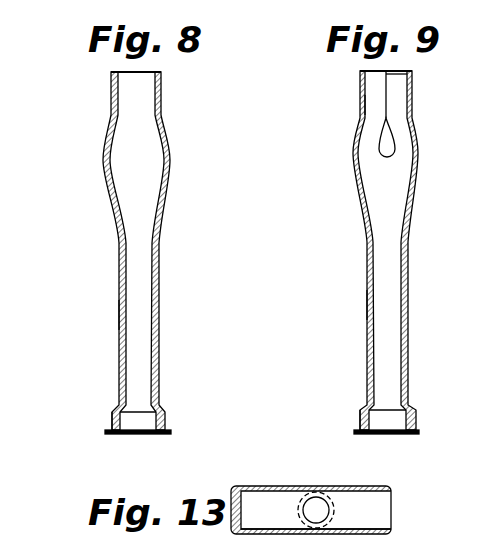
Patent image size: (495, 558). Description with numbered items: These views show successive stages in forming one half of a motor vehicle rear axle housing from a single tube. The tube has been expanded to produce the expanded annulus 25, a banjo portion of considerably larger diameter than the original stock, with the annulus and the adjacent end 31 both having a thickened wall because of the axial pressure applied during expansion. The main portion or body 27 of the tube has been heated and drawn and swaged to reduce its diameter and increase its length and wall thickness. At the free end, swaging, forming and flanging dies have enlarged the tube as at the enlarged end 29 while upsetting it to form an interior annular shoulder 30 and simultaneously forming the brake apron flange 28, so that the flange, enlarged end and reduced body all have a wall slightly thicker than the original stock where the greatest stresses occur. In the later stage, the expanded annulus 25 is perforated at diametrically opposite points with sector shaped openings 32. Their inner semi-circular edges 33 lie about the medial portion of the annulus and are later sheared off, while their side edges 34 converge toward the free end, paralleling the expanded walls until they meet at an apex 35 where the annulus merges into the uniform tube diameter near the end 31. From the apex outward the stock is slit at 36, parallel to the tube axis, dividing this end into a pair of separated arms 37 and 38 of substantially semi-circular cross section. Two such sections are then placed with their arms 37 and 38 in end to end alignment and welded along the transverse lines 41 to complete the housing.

In FIG. 8, the expanded annulus 25 is at (103, 161).
In FIG. 9, the expanded annulus 25 is at (385, 250).
In FIG. 8, the main portion or body 27 is at (119, 314).
In FIG. 9, the main portion or body 27 is at (367, 304).
In FIG. 8, the brake apron flange 28 is at (105, 432).
In FIG. 9, the brake apron flange 28 is at (354, 431).
In FIG. 8, the enlarged end 29 is at (112, 420).
In FIG. 9, the enlarged end 29 is at (361, 415).
In FIG. 8, the interior annular shoulder 30 is at (156, 414).
In FIG. 9, the interior annular shoulder 30 is at (410, 412).
In FIG. 8, the adjacent end 31 is at (162, 100).
In FIG. 9, the adjacent end 31 is at (366, 83).
In FIG. 9, the sector shaped openings 32 is at (384, 147).
In FIG. 9, the inner semi-circular edges 33 is at (385, 158).
In FIG. 9, the side edges 34 is at (393, 142).
In FIG. 9, the apex 35 is at (387, 118).
In FIG. 9, the slit 36 is at (387, 83).
In FIG. 9, the arm 37 is at (373, 105).
In FIG. 13, the arm 37 is at (241, 490).
In FIG. 9, the arm 38 is at (396, 103).
In FIG. 13, the arm 38 is at (397, 505).
In FIG. 13, the welding lines 41 is at (313, 543).